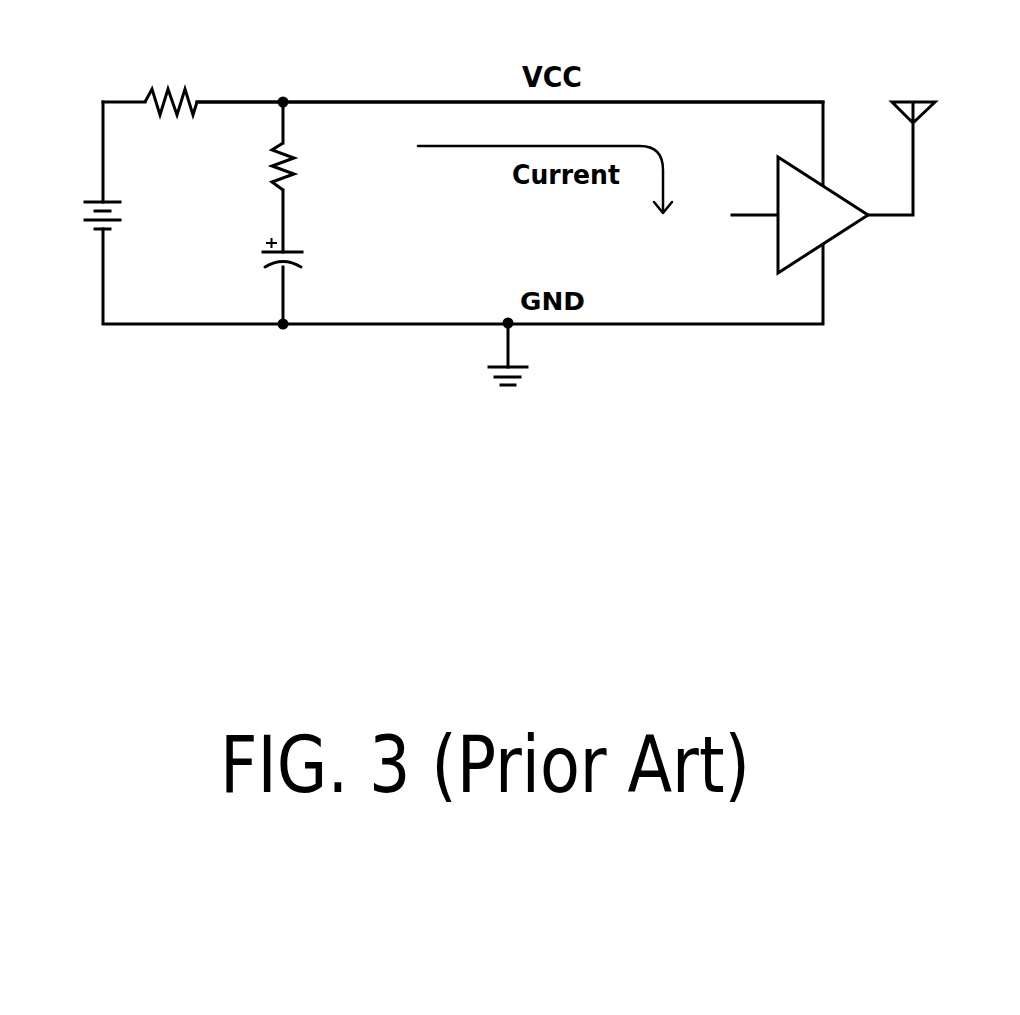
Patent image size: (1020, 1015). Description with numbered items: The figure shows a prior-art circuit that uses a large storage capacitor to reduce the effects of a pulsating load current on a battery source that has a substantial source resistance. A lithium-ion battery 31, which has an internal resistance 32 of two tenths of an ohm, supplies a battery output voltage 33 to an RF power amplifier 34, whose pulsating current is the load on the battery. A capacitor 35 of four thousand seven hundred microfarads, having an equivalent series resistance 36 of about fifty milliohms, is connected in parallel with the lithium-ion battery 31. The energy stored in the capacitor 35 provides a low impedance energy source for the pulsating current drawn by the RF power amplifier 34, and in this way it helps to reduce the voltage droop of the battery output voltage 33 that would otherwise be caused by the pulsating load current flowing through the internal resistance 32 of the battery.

The lithium-ion battery 31 is at (82, 208).
The internal resistance 32 is at (170, 90).
The battery output voltage 33 is at (326, 100).
The RF power amplifier 34 is at (777, 170).
The capacitor 35 is at (298, 260).
The equivalent series resistance 36 is at (292, 170).